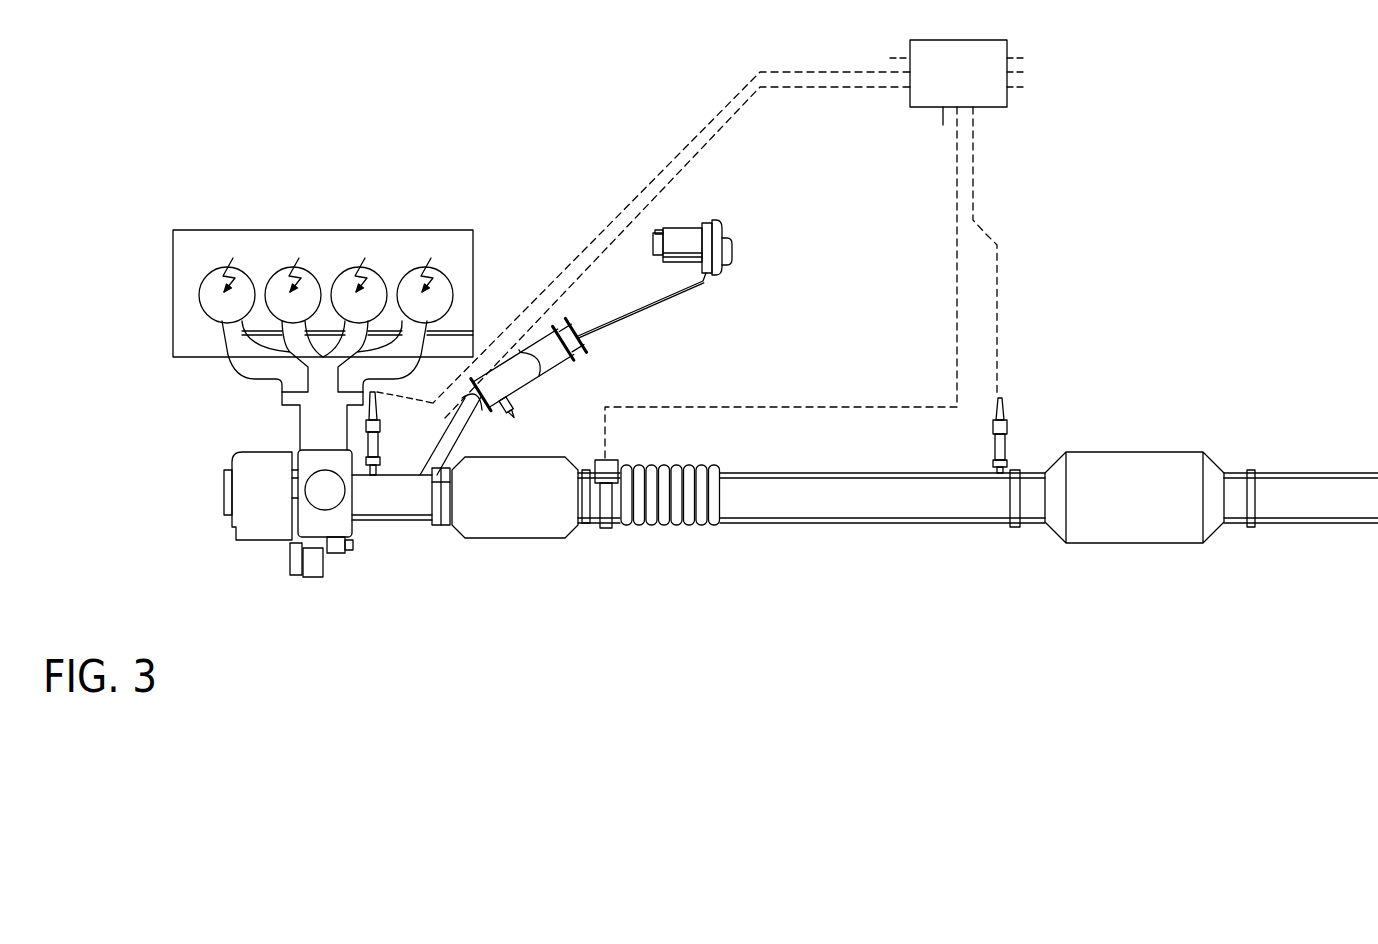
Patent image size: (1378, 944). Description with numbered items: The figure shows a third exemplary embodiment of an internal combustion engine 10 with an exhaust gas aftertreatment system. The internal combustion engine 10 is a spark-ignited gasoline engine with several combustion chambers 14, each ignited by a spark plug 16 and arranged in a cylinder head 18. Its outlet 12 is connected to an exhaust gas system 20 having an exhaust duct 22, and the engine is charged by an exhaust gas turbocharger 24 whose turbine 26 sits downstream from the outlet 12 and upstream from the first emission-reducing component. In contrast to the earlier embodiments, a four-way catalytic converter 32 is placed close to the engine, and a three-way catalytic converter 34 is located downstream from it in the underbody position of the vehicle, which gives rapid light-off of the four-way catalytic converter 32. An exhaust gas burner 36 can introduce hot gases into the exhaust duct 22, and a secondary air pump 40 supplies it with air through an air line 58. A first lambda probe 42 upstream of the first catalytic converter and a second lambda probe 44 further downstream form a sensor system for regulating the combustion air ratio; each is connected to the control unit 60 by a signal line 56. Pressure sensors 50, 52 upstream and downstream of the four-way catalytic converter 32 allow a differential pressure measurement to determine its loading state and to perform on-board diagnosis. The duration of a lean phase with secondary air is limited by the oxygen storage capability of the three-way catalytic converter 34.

The internal combustion engine 10 is at (202, 231).
The outlet 12 is at (317, 373).
The combustion chamber 14 is at (206, 300).
The spark plug 16 is at (359, 267).
The cylinder head 18 is at (458, 345).
The exhaust gas system 20 is at (1178, 303).
The exhaust duct 22 is at (807, 508).
The exhaust gas turbocharger 24 is at (258, 564).
The turbine 26 is at (333, 548).
The four-way catalytic converter close to the engine 32 is at (508, 527).
The second three-way catalytic converter 34 is at (1158, 527).
The exhaust gas burner 36 is at (535, 367).
The secondary air pump 40 is at (688, 235).
The first lambda probe 42 is at (374, 443).
The second lambda probe 44 is at (1002, 448).
The first pressure sensor 50 is at (446, 469).
The second pressure sensor 52 is at (606, 470).
The signal line 56 is at (983, 228).
The air line 58 is at (643, 307).
The control unit 60 is at (992, 57).